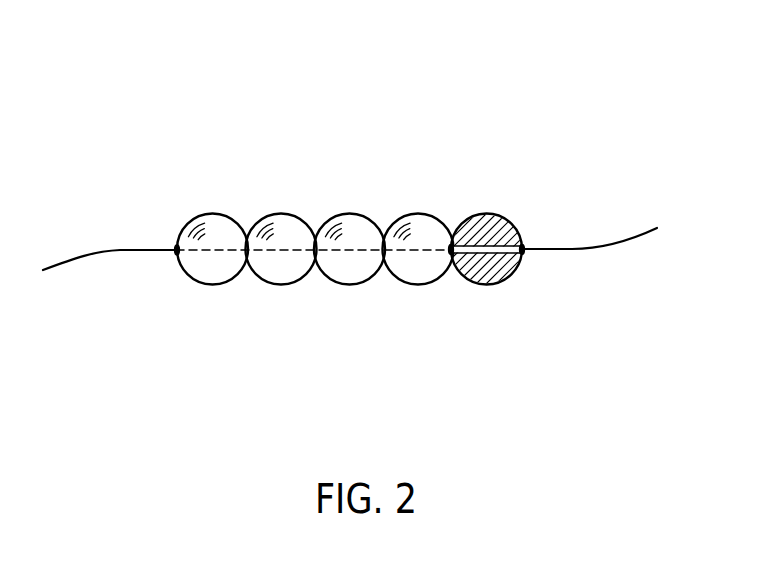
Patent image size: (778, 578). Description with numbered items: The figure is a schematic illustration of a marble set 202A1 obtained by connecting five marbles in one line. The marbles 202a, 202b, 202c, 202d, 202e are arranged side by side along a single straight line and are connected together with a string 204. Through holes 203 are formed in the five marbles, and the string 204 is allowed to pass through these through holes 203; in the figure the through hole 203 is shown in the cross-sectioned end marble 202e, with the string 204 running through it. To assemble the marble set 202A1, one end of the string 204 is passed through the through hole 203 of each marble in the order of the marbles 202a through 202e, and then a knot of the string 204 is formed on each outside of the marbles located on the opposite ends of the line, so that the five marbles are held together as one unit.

The marble set 202A1 is at (123, 64).
The marble 202a is at (203, 287).
The marble 202b is at (282, 287).
The marble 202c is at (350, 287).
The marble 202d is at (417, 287).
The marble 202e is at (485, 273).
The through hole 203 is at (497, 247).
The string 204 is at (595, 250).